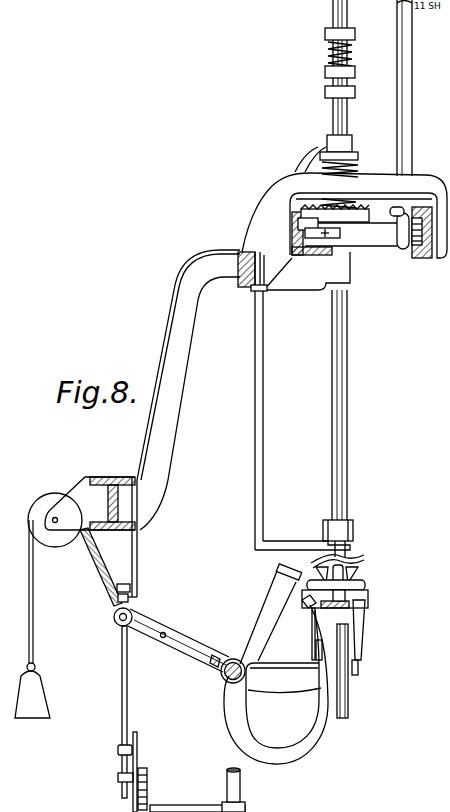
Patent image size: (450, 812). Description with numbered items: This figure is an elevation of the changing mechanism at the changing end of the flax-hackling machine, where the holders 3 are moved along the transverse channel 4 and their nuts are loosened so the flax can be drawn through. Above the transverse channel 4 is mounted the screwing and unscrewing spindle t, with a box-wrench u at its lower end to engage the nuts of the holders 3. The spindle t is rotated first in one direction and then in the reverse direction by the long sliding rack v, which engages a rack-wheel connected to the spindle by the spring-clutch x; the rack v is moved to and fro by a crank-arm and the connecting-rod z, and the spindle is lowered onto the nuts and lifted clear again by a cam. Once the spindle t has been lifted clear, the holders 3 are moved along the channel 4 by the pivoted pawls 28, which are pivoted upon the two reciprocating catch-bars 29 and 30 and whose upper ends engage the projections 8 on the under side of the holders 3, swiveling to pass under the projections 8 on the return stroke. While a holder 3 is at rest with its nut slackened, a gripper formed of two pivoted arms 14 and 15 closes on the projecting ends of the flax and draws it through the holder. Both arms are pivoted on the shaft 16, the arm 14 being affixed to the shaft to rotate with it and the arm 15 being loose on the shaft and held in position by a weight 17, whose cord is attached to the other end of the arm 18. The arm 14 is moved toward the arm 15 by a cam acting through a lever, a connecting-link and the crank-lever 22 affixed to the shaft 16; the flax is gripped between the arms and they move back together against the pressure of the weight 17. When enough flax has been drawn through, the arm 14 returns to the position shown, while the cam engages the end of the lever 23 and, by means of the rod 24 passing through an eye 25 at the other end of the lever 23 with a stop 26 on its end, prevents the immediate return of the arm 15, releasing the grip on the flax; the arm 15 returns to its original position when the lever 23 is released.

The connecting-rod z is at (413, 104).
The spring-clutch x is at (342, 211).
The sliding rack v is at (320, 231).
The screwing and unscrewing spindle t is at (349, 375).
The box-wrench u is at (354, 531).
The projections 8 is at (362, 569).
The holder 3 is at (349, 583).
The transverse channel 4 is at (343, 612).
The pivoted pawls 28 is at (312, 628).
The catch-bar 29 is at (356, 674).
The catch-bar 30 is at (316, 650).
The gripper arm 15 is at (266, 597).
The gripper arm 14 is at (318, 714).
The shaft 16 is at (222, 681).
The crank-lever 22 is at (165, 645).
The arm 18 is at (124, 577).
The weight 17 is at (32, 619).
The rod 24 is at (121, 703).
The eye 25 is at (117, 749).
The stop 26 is at (116, 779).
The lever 23 is at (137, 768).